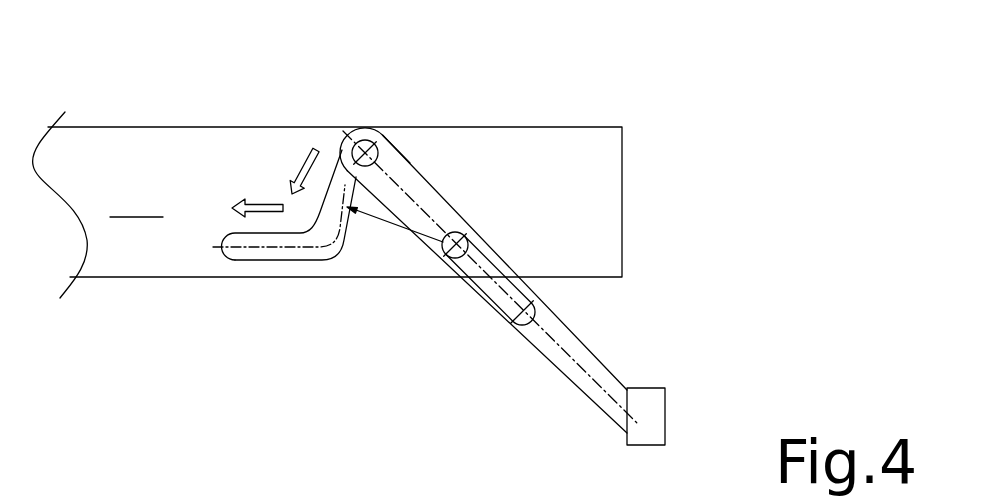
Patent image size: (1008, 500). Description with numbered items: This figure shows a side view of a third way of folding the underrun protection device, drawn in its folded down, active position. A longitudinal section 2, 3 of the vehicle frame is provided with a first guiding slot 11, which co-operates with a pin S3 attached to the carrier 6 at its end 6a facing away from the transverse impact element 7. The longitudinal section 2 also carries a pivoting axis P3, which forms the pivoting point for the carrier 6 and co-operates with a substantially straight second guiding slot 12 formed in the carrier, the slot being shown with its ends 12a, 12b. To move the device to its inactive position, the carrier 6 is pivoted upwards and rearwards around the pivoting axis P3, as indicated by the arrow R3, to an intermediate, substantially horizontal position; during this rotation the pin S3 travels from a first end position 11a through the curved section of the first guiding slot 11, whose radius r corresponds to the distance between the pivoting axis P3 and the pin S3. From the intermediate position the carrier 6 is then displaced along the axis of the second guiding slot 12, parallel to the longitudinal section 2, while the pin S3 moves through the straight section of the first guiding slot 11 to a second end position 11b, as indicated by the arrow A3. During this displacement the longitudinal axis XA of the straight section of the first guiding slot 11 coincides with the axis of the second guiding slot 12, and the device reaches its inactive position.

The longitudinal section 2 is at (136, 200).
The longitudinal section 3 is at (650, 206).
The carrier 6 is at (565, 376).
The end of carrier facing away from impact element 6a is at (397, 150).
The impact element 7 is at (655, 410).
The first guiding slot 11 is at (300, 258).
The first end position 11a is at (372, 90).
The second end position 11b is at (227, 252).
The second guiding slot 12 is at (459, 262).
The pin seat 12a is at (441, 247).
The slot 12b is at (518, 328).
The radius r is at (395, 225).
The longitudinal axis of straight section of first guiding slot XA is at (267, 259).
The arrow A3 is at (243, 181).
The arrow R3 is at (283, 146).
The pin S3 is at (359, 141).
The pivoting axis P3 is at (452, 258).